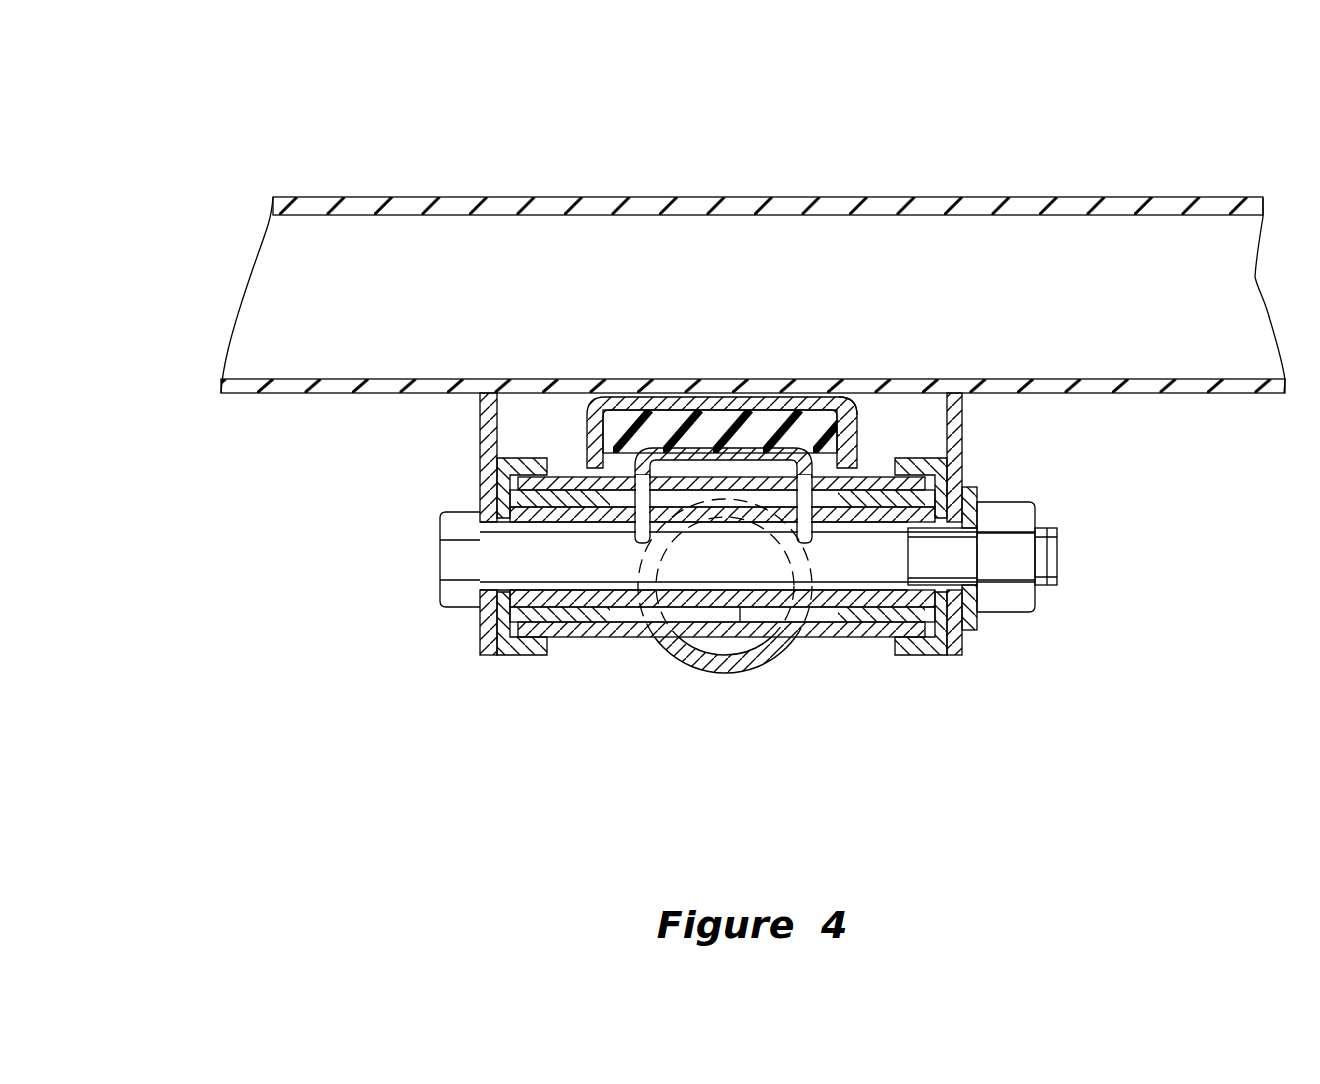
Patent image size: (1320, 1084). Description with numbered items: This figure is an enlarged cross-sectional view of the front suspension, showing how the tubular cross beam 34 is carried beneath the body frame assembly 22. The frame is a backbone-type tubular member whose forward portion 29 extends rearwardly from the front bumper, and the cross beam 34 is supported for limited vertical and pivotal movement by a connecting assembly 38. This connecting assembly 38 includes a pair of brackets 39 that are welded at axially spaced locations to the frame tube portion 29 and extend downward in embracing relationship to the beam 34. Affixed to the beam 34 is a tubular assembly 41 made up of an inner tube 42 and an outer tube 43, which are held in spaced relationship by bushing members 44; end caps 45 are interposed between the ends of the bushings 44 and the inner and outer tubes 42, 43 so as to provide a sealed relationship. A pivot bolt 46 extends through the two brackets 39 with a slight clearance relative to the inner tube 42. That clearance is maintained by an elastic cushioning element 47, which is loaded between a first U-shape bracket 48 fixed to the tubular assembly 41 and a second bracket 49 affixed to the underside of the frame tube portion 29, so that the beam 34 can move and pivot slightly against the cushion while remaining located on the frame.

The body frame assembly 22 is at (1164, 188).
The forward portion 29 is at (993, 197).
The tubular cross beam 34 is at (687, 684).
The connecting assembly 38 is at (700, 617).
The brackets 39 is at (480, 438).
The tubular assembly 41 is at (907, 673).
The inner tube 42 is at (747, 636).
The outer tube 43 is at (813, 638).
The bushing members 44 is at (620, 618).
The end caps 45 is at (535, 657).
The pivot bolt 46 is at (463, 606).
The elastic cushioning element 47 is at (770, 428).
The first U-shape bracket 48 is at (627, 432).
The second bracket 49 is at (866, 402).